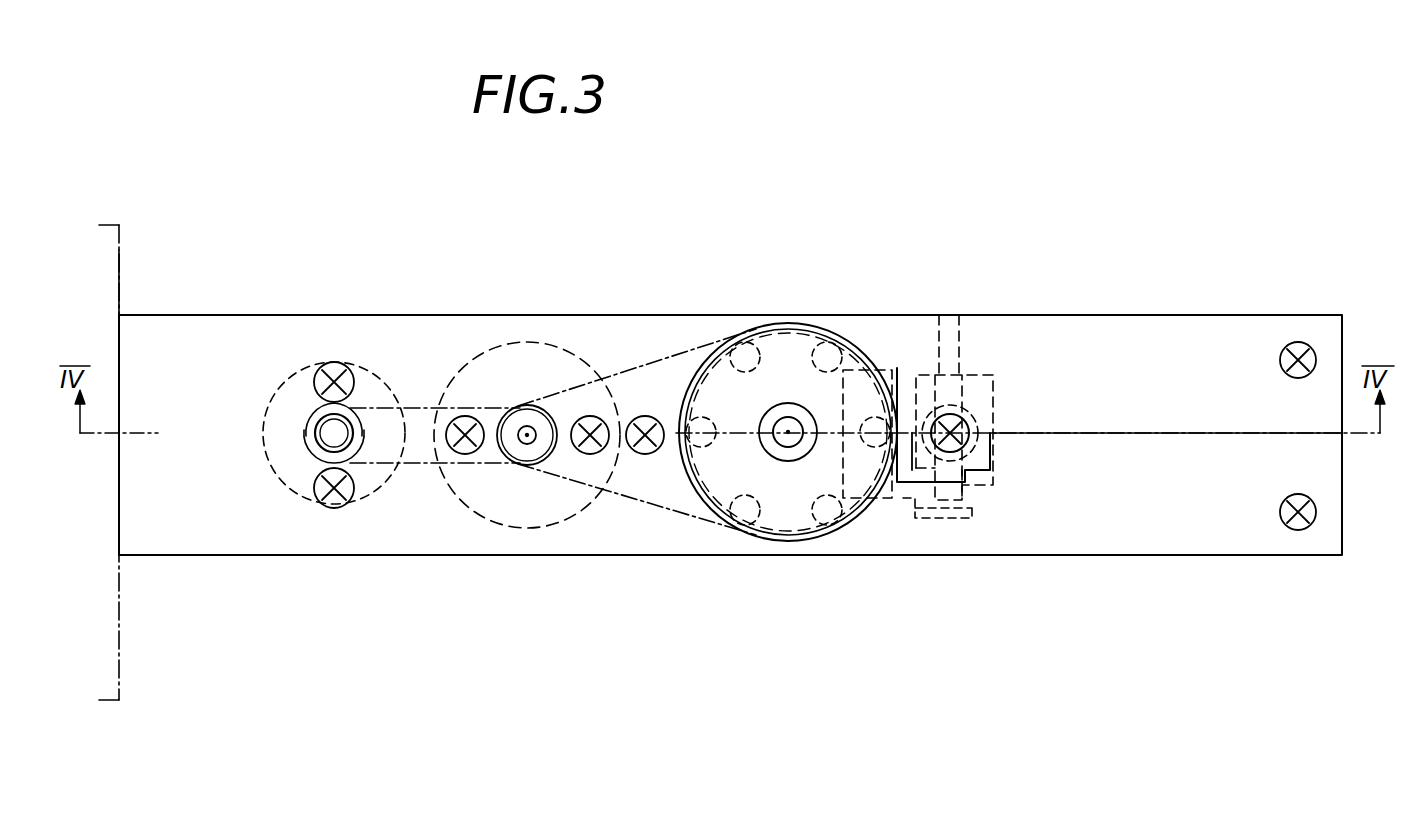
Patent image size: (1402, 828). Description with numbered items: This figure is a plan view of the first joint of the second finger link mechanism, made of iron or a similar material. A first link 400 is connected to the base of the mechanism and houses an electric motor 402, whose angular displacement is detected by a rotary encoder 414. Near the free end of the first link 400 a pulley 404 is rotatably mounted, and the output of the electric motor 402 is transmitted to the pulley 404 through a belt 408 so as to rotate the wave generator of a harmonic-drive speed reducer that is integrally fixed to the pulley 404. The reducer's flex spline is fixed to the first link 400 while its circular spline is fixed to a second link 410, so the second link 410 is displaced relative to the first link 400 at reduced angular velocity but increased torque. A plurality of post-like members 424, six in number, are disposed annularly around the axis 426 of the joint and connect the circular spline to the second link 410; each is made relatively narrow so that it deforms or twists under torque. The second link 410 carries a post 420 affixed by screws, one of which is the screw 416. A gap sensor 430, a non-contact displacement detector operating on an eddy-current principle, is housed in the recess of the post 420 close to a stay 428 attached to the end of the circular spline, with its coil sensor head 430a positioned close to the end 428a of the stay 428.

The first link 400 is at (404, 568).
The electric motor 402 is at (476, 352).
The pulley 404 is at (740, 522).
The belt 408 is at (664, 362).
The second link 410 is at (1088, 570).
The rotary encoder 414 is at (366, 372).
The screw 416 is at (970, 428).
The post 420 is at (996, 445).
The post-like members 424 is at (705, 420).
The axis 426 is at (790, 438).
The stay 428 is at (903, 500).
The end of the stay 428a is at (968, 520).
The gap sensor 430 is at (958, 390).
The sensor head 430a is at (968, 482).